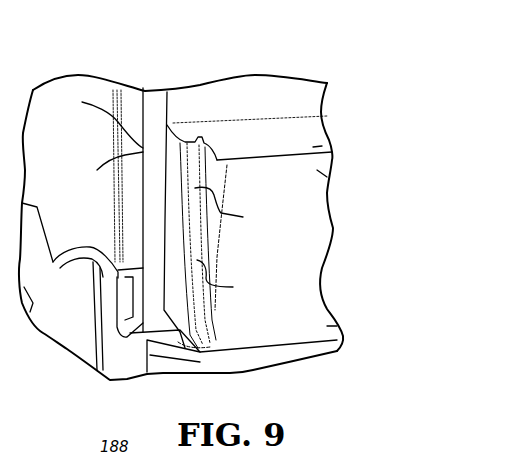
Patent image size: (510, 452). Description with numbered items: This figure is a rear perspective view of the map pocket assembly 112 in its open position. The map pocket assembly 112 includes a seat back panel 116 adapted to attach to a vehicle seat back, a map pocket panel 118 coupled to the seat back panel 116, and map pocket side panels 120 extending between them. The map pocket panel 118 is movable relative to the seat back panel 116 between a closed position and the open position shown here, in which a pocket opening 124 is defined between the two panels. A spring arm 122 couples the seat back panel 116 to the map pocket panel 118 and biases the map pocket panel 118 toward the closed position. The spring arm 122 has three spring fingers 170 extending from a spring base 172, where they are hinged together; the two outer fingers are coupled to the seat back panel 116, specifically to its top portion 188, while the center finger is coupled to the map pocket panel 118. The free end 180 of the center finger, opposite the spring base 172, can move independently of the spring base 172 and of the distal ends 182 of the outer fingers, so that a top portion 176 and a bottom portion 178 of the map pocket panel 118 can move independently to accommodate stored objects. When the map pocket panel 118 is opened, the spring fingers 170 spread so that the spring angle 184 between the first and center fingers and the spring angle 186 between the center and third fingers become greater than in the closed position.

The map pocket assembly 112 is at (113, 68).
The seat back panel 116 is at (120, 218).
The map pocket panel 118 is at (313, 147).
The map pocket side panel 120 is at (185, 341).
The spring arm 122 is at (223, 313).
The pocket opening 124 is at (297, 137).
The spring finger 170 is at (248, 133).
The spring base 172 is at (240, 340).
The top portion of map pocket panel 176 is at (327, 177).
The bottom portion of map pocket panel 178 is at (337, 326).
The free end of spring finger 180 is at (286, 183).
The distal end of spring finger 182 is at (172, 146).
The spring angle 184 is at (233, 280).
The spring angle 186 is at (238, 207).
The top portion of seat back panel 188 is at (100, 176).